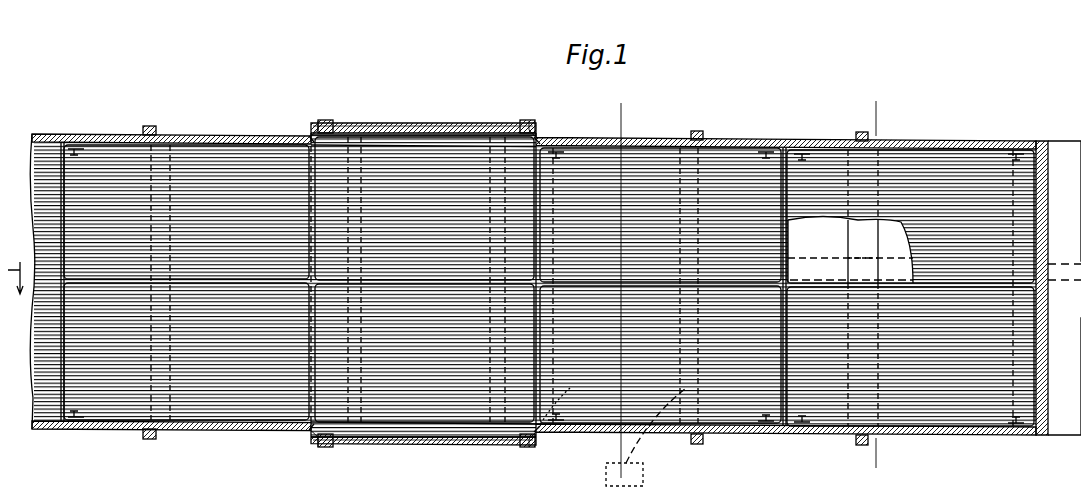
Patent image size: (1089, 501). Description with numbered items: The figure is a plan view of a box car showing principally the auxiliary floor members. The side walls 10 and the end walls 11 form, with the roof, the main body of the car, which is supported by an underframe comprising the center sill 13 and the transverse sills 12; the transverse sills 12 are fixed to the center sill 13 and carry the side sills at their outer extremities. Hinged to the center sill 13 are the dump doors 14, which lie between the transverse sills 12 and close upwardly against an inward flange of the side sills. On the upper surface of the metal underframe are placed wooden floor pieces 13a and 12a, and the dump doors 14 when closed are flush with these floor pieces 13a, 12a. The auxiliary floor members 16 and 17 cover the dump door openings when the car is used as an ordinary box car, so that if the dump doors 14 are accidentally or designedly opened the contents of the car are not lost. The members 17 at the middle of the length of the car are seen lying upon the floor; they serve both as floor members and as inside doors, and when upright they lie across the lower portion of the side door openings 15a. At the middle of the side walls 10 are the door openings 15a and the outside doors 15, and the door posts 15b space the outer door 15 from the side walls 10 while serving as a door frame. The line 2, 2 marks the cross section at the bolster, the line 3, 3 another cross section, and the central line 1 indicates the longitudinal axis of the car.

The section line 1 is at (15, 275).
The section line 2 2 is at (845, 451).
The section line 3 3 is at (421, 457).
The side walls 10 is at (205, 424).
The end walls 11 is at (1041, 132).
The transverse sills 12 is at (708, 352).
The wooden floor pieces 12a is at (863, 248).
The center sill 13 is at (881, 280).
The wooden floor pieces 13a is at (818, 278).
The dump doors 14 is at (850, 250).
The outside doors 15 is at (482, 437).
The side door openings 15a is at (404, 96).
The door posts 15b is at (535, 426).
The auxiliary floor members 16 is at (549, 285).
The auxiliary floor members 17 is at (422, 283).